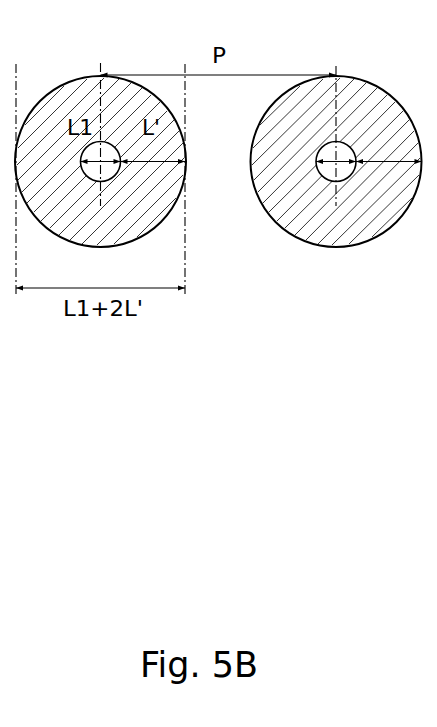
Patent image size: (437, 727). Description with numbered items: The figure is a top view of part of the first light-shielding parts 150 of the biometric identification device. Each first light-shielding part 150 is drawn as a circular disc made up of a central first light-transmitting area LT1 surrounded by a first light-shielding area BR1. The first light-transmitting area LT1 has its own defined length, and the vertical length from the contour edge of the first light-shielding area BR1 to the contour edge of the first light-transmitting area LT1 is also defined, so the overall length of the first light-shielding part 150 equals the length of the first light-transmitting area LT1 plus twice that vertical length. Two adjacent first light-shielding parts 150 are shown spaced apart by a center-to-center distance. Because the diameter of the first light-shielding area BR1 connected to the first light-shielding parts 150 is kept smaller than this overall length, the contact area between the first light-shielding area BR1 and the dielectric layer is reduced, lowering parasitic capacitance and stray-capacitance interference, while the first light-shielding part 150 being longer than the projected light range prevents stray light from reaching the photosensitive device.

The first light-shielding part 150 is at (336, 230).
The first light-transmitting area LT1 is at (341, 143).
The first light-shielding area BR1 is at (363, 223).